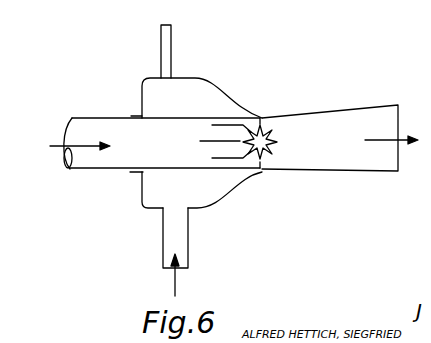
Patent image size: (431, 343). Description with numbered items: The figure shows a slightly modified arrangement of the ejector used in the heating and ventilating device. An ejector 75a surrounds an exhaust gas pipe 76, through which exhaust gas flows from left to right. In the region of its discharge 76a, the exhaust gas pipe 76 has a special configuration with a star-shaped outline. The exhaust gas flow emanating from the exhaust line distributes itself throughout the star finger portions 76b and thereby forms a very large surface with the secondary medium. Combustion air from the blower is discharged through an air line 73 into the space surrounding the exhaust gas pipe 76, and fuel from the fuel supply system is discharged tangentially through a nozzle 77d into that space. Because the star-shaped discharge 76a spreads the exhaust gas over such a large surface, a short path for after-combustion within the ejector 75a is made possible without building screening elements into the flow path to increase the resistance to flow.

The exhaust gas pipe 76 is at (99, 162).
The discharge 76a is at (265, 160).
The star finger portions 76b is at (278, 128).
The ejector 75a is at (202, 88).
The nozzle 77d is at (172, 38).
The air line 73 is at (170, 241).